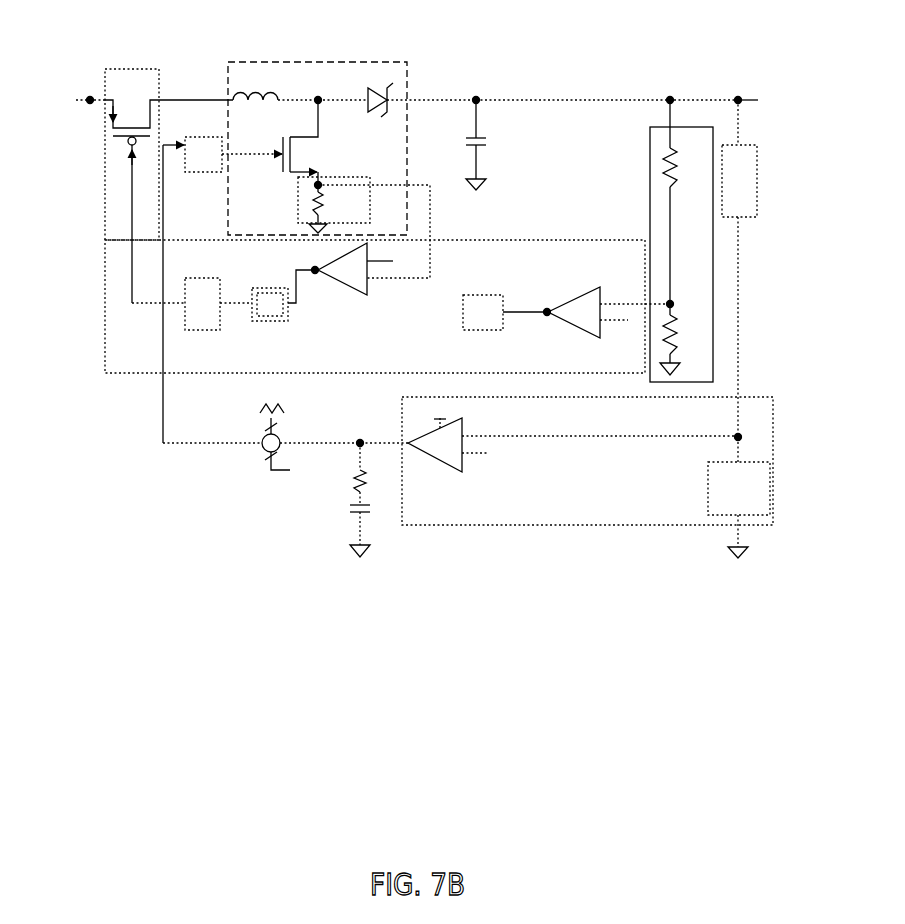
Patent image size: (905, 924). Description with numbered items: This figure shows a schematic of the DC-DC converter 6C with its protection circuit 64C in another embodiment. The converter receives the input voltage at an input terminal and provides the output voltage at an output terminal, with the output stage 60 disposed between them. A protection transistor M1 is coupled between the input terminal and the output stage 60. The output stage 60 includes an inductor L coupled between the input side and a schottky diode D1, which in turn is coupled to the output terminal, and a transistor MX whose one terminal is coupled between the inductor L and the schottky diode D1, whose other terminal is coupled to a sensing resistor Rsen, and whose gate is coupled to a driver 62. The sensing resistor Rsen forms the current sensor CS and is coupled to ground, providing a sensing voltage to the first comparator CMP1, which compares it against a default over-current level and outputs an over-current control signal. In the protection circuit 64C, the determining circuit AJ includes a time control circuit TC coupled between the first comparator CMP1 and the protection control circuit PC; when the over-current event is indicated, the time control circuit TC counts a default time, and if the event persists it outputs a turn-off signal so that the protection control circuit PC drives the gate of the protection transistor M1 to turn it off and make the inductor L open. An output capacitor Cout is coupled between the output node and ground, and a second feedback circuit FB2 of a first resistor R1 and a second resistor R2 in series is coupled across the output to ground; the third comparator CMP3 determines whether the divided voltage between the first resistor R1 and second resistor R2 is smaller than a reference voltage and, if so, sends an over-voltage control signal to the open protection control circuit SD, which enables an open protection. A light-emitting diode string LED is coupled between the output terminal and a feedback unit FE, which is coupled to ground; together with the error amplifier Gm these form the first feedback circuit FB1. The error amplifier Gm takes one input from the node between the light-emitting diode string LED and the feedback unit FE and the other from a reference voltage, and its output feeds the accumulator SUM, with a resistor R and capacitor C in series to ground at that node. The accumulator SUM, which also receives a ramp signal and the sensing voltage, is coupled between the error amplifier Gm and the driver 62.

The DC-DC converter 6C is at (91, 25).
The output stage 60 is at (269, 62).
The driver 62 is at (212, 165).
The protection circuit 64C is at (134, 365).
The protection transistor M1 is at (169, 186).
The inductor L is at (255, 88).
The schottky diode D1 is at (380, 93).
The transistor MX is at (307, 142).
The sensing resistor Rsen is at (334, 205).
The current sensor CS is at (298, 178).
The output capacitor Cout is at (495, 144).
The second feedback circuit FB2 is at (650, 150).
The second resistor R2 is at (682, 167).
The first resistor R1 is at (680, 339).
The light-emitting diode string LED is at (751, 191).
The protection control circuit PC is at (211, 313).
The time control circuit TC is at (278, 312).
The determining circuit AJ is at (265, 288).
The first comparator CMP1 is at (363, 270).
The open protection control circuit SD is at (491, 320).
The third comparator CMP3 is at (592, 321).
The accumulator SUM is at (264, 451).
The resistor R is at (368, 467).
The capacitor C is at (369, 524).
The first feedback circuit FB1 is at (440, 516).
The error amplifier Gm is at (451, 451).
The feedback unit FE is at (747, 498).